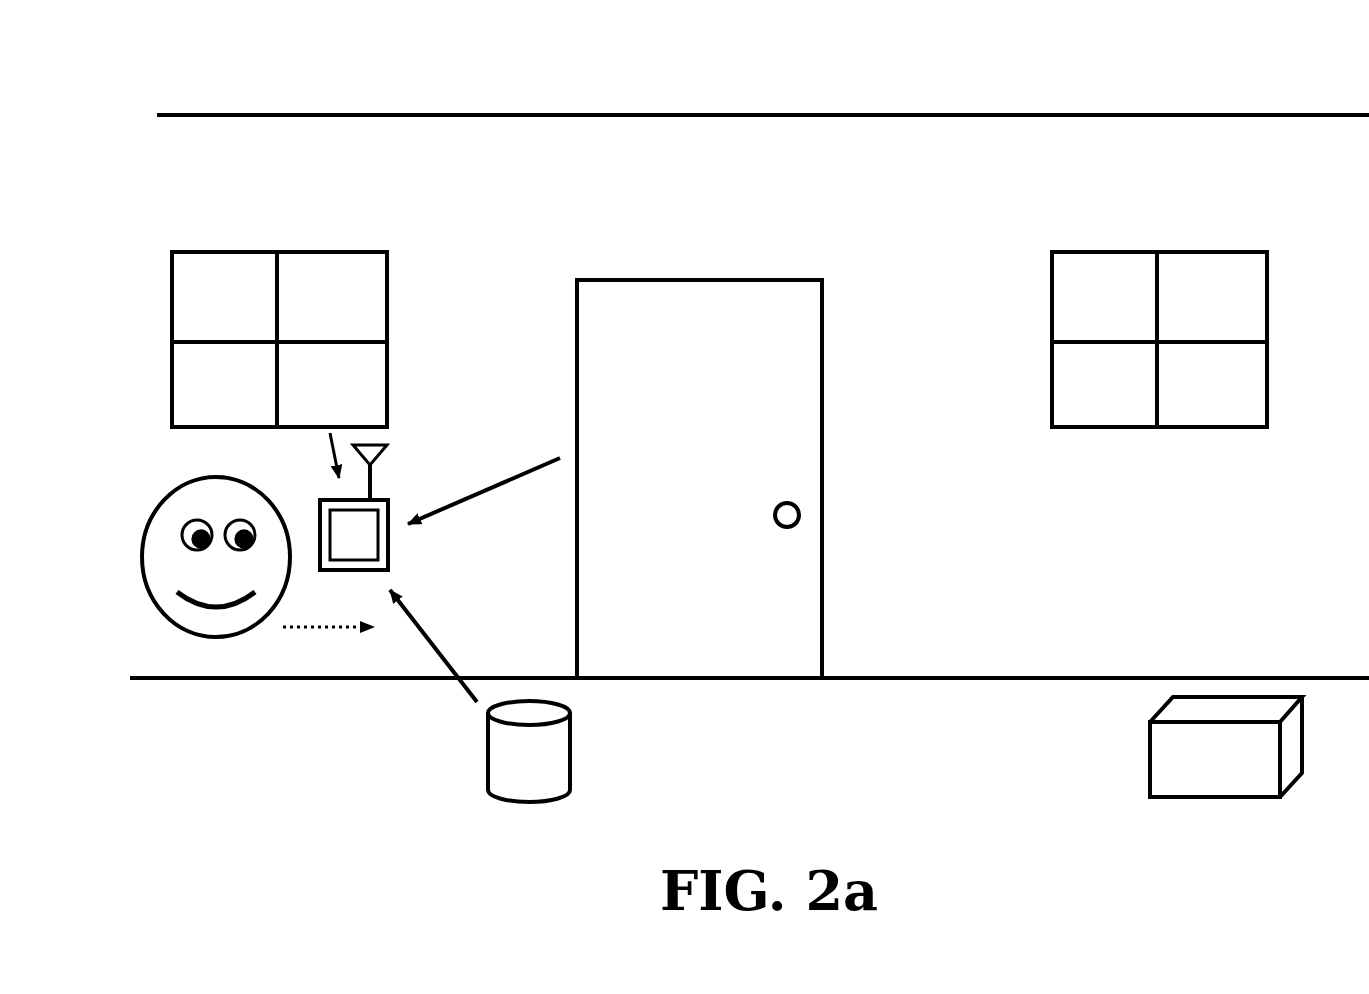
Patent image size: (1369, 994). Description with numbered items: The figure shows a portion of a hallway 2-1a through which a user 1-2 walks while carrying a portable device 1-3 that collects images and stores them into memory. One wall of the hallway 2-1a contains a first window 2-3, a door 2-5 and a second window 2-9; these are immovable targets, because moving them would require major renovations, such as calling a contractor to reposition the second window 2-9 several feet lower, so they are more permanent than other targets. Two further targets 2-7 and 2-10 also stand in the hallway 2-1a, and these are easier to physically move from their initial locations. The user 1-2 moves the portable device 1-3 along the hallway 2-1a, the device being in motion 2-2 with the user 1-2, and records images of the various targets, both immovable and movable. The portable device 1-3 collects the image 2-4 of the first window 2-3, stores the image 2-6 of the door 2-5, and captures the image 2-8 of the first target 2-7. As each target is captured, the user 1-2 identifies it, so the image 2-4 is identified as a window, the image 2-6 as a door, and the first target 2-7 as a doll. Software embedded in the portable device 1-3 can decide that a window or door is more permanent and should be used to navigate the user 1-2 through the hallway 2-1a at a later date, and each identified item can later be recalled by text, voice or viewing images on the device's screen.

The hallway 2-1a is at (409, 98).
The first window 2-3 is at (362, 248).
The second window 2-9 is at (1118, 248).
The door 2-5 is at (738, 273).
The user 1-2 is at (214, 642).
The portable device 1-3 is at (394, 554).
The image of the window 2-4 is at (330, 462).
The motion 2-2 is at (330, 636).
The image of the door 2-6 is at (510, 470).
The image of the first target 2-8 is at (460, 695).
The first target 2-7 is at (578, 780).
The second target 2-10 is at (1170, 804).